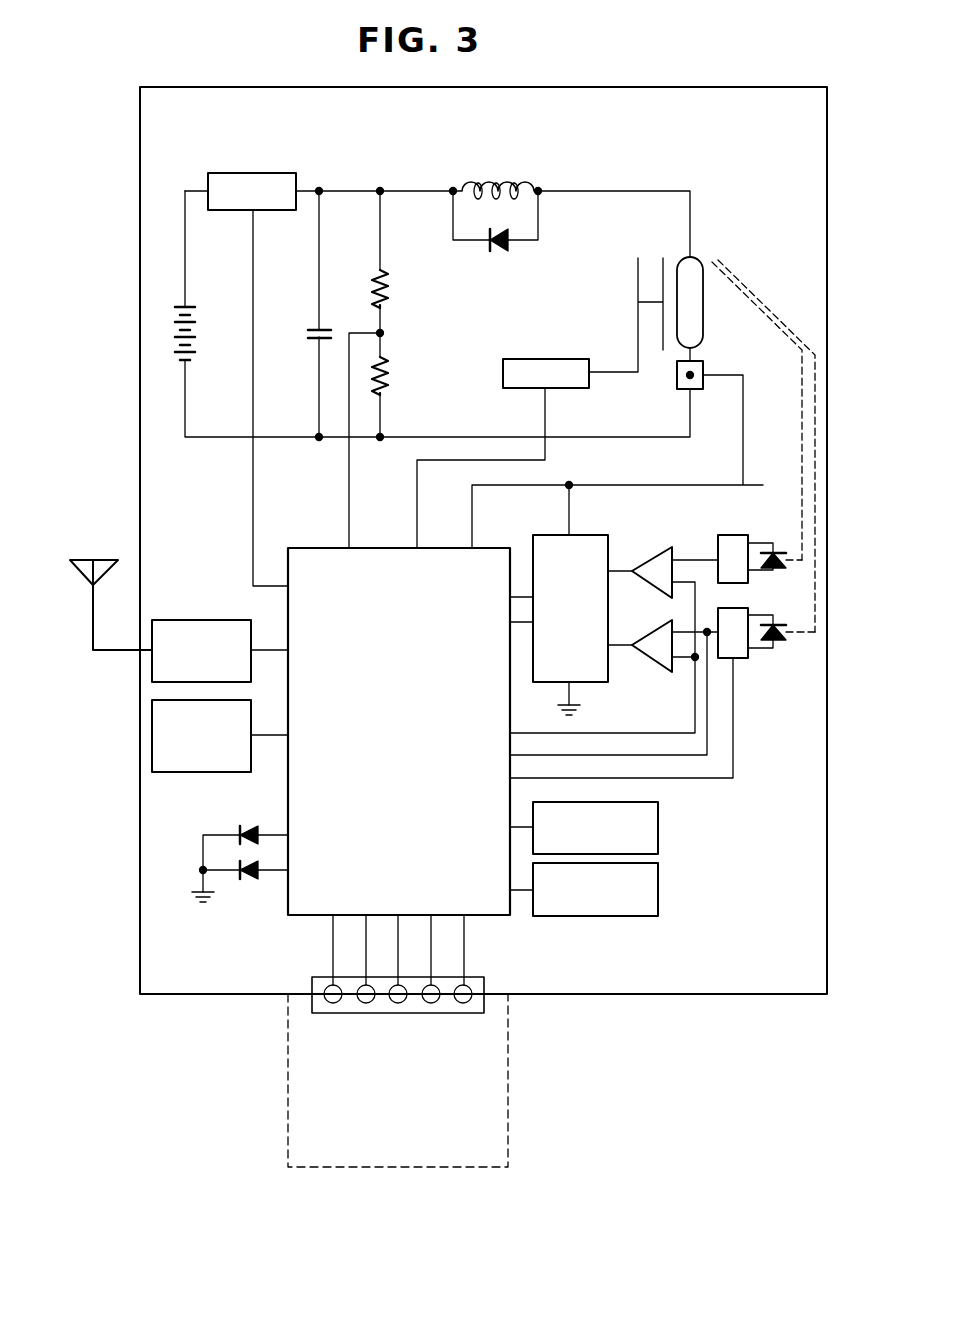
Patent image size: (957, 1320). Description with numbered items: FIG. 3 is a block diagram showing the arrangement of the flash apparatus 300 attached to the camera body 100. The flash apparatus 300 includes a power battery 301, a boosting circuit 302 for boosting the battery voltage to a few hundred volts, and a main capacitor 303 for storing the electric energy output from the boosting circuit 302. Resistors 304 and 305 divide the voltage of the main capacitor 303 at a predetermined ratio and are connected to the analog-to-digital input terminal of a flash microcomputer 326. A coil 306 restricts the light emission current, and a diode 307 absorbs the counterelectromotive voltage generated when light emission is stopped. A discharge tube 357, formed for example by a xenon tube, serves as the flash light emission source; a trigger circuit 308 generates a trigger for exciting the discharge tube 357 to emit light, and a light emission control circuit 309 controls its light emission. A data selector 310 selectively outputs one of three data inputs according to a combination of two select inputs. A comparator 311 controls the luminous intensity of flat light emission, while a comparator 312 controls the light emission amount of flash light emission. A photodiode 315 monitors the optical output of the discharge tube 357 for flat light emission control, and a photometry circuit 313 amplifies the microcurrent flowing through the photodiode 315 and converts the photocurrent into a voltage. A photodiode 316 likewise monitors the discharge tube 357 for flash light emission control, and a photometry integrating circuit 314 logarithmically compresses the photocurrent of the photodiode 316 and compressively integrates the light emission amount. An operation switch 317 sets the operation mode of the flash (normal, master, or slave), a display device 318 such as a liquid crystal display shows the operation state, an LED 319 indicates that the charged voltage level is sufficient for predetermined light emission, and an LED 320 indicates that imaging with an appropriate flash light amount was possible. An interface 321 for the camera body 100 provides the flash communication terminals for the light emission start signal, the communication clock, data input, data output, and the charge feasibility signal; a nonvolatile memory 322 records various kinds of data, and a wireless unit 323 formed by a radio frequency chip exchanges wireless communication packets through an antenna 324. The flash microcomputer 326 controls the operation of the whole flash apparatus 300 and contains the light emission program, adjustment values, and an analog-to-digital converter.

The camera body 100 is at (518, 1143).
The flash apparatus 300 is at (767, 82).
The power battery 301 is at (190, 306).
The boosting circuit 302 is at (276, 173).
The main capacitor 303 is at (311, 337).
The resistor 304 is at (392, 287).
The resistor 305 is at (392, 374).
The coil 306 is at (480, 176).
The diode 307 is at (508, 252).
The trigger circuit 308 is at (572, 359).
The light emission control circuit 309 is at (678, 389).
The data selector 310 is at (598, 534).
The comparator 311 is at (662, 552).
The comparator 312 is at (664, 672).
The photometry circuit 313 is at (728, 535).
The photometry integrating circuit 314 is at (740, 660).
The photodiode 315 is at (778, 549).
The photodiode 316 is at (781, 625).
The operation switch 317 is at (660, 820).
The display device 318 is at (660, 882).
The LED 319 is at (254, 826).
The LED 320 is at (254, 880).
The interface 321 is at (312, 981).
The nonvolatile memory 322 is at (180, 773).
The wireless unit 323 is at (178, 620).
The antenna 324 is at (78, 572).
The flash microcomputer 326 is at (303, 548).
The discharge tube 357 is at (696, 258).